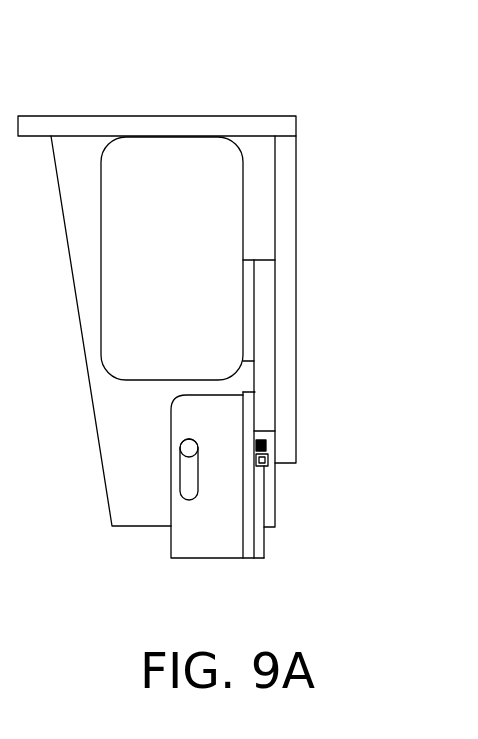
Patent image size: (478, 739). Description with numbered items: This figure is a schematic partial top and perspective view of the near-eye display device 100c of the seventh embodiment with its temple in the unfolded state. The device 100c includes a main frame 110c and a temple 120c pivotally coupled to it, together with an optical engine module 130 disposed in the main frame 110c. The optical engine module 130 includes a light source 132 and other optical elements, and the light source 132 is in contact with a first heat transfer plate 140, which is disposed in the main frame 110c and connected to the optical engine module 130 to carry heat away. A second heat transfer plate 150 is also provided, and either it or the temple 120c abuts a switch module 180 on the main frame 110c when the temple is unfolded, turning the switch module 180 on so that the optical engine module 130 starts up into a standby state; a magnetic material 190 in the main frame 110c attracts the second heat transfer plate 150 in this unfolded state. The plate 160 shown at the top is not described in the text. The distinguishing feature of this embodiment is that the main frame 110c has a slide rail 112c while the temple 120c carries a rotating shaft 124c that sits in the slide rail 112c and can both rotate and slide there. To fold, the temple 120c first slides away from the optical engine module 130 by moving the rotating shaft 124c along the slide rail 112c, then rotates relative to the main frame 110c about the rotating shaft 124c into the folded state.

The near-eye display device 100c is at (342, 594).
The main frame 110c is at (284, 222).
The slide rail 112c is at (197, 473).
The temple 120c is at (180, 537).
The rotating shaft 124c is at (190, 447).
The optical engine module 130 is at (190, 210).
The light source 132 is at (247, 287).
The first heat transfer plate 140 is at (266, 316).
The second heat transfer plate 150 is at (247, 492).
The top plate 160 is at (93, 127).
The switch module 180 is at (268, 461).
The magnetic material 190 is at (267, 443).